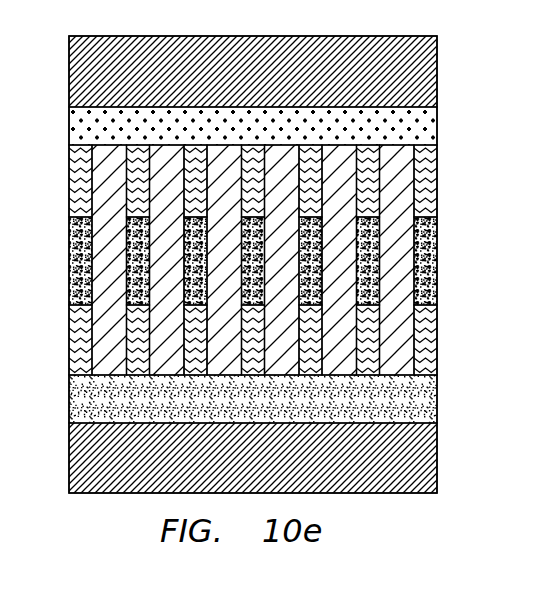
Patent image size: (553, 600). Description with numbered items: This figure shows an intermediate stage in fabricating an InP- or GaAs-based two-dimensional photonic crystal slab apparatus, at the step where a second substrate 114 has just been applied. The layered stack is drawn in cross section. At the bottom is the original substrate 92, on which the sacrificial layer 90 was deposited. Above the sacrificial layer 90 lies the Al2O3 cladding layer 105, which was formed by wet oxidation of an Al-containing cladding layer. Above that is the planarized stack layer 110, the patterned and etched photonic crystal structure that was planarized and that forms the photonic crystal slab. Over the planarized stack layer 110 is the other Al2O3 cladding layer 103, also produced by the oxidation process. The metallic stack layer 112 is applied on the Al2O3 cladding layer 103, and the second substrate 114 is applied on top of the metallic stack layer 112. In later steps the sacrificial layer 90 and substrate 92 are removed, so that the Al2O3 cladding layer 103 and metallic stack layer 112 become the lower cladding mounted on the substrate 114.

The second substrate 114 is at (437, 88).
The metallic stack layer 112 is at (437, 130).
The Al2O3 cladding layer 103 is at (437, 178).
The planarized stack layer 110 is at (457, 265).
The Al2O3 cladding layer 105 is at (437, 335).
The sacrificial layer 90 is at (437, 395).
The substrate 92 is at (437, 457).